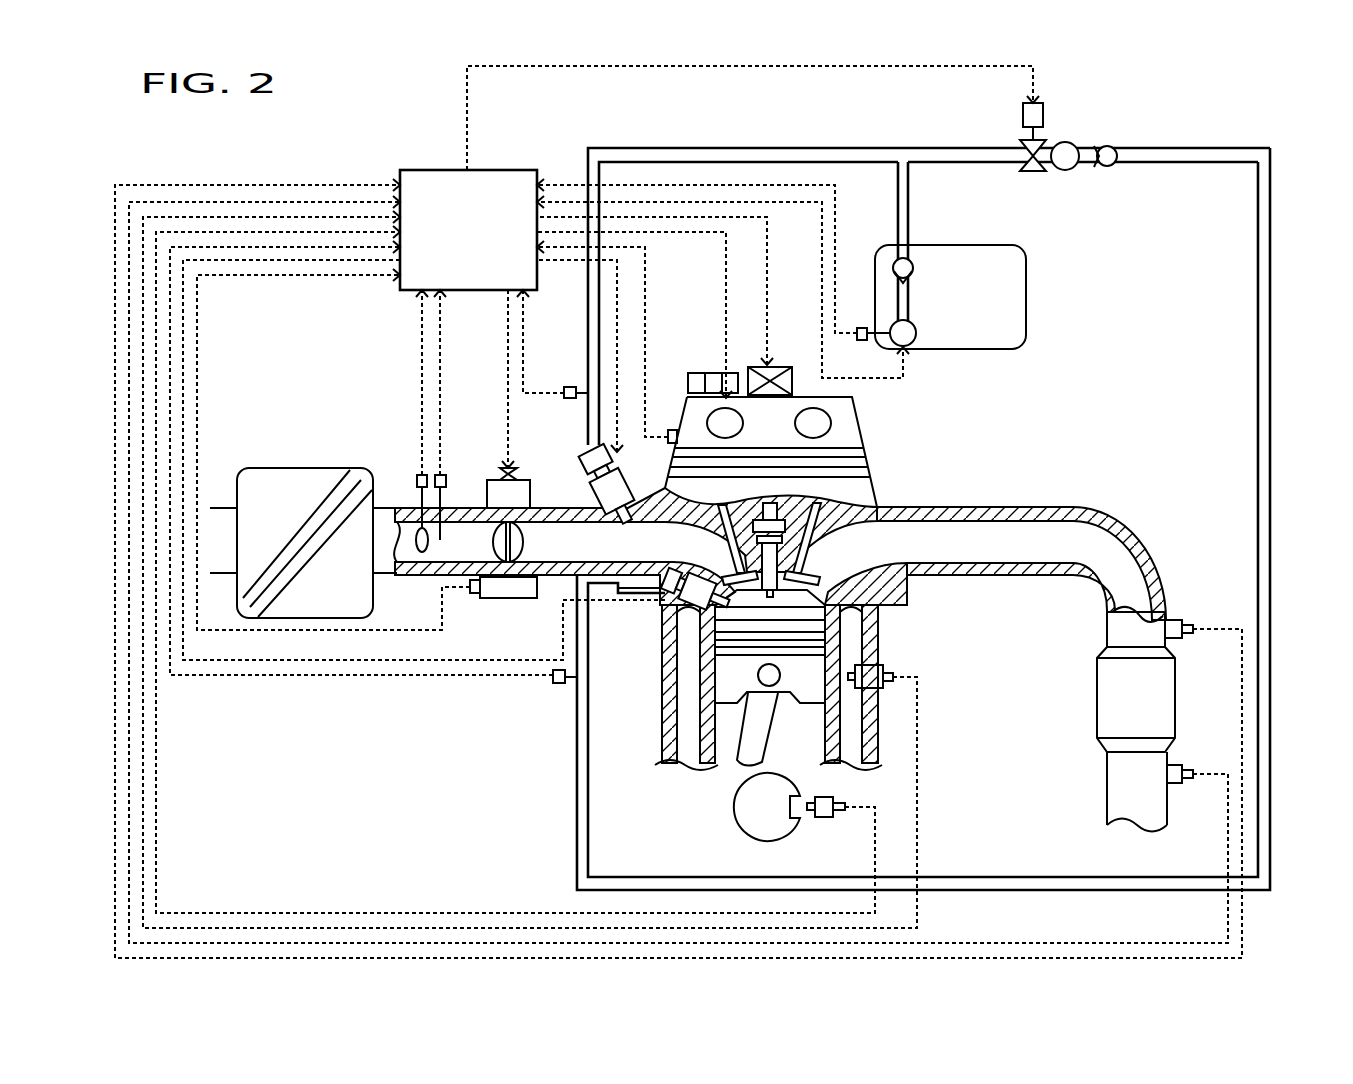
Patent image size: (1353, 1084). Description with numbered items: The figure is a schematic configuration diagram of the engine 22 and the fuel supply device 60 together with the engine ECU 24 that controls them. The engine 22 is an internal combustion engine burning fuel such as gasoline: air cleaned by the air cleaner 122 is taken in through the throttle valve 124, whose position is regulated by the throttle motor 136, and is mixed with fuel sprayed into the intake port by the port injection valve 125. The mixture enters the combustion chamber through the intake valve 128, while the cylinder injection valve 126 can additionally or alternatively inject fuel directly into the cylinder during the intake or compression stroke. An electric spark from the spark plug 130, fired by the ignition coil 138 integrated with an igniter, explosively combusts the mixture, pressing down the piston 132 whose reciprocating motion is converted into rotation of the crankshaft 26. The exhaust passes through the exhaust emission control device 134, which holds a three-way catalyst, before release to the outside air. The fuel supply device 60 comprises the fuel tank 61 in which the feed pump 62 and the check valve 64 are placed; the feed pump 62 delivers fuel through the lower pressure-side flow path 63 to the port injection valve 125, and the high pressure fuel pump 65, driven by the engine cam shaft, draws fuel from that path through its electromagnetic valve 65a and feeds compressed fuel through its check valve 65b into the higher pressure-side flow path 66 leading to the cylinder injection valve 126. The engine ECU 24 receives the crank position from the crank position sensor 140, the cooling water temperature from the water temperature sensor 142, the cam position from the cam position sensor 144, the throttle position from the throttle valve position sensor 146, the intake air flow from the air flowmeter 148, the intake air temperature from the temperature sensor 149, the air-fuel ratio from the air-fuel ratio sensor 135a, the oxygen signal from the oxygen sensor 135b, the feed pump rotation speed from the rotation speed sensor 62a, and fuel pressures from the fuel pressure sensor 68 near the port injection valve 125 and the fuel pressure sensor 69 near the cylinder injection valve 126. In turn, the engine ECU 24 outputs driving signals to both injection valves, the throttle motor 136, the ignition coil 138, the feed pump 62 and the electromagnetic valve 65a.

The engine 22 is at (746, 590).
The engine ECU 24 is at (497, 170).
The crankshaft 26 is at (737, 802).
The fuel supply device 60 is at (920, 464).
The fuel tank 61 is at (978, 243).
The feed pump 62 is at (916, 333).
The rotation speed sensor 62a is at (862, 327).
The lower pressure-side flow path 63 is at (928, 148).
The check valve 64 is at (907, 257).
The high pressure fuel pump 65 is at (1072, 172).
The electromagnetic valve 65a is at (1032, 173).
The check valve 65b is at (1110, 142).
The higher pressure-side flow path 66 is at (1167, 148).
The fuel pressure sensor 68 is at (572, 385).
The fuel pressure sensor 69 is at (558, 687).
The air cleaner 122 is at (308, 468).
The throttle valve 124 is at (523, 535).
The port injection valve 125 is at (582, 450).
The cylinder injection valve 126 is at (683, 617).
The intake valve 128 is at (732, 563).
The spark plug 130 is at (770, 563).
The piston 132 is at (732, 675).
The exhaust emission control device 134 is at (1097, 697).
The air-fuel ratio sensor 135a is at (1170, 617).
The oxygen sensor 135b is at (1172, 785).
The throttle motor 136 is at (495, 478).
The ignition coil 138 is at (785, 365).
The crank position sensor 140 is at (823, 818).
The water temperature sensor 142 is at (877, 667).
The cam position sensor 144 is at (672, 427).
The throttle valve position sensor 146 is at (508, 600).
The air flowmeter 148 is at (417, 482).
The temperature sensor 149 is at (467, 462).